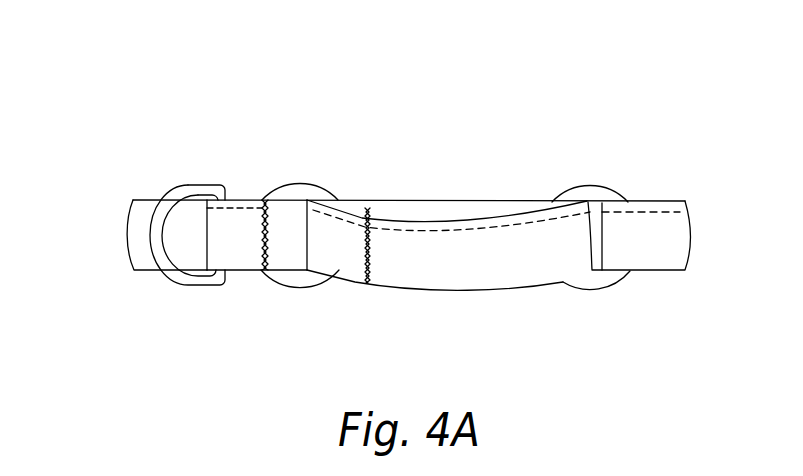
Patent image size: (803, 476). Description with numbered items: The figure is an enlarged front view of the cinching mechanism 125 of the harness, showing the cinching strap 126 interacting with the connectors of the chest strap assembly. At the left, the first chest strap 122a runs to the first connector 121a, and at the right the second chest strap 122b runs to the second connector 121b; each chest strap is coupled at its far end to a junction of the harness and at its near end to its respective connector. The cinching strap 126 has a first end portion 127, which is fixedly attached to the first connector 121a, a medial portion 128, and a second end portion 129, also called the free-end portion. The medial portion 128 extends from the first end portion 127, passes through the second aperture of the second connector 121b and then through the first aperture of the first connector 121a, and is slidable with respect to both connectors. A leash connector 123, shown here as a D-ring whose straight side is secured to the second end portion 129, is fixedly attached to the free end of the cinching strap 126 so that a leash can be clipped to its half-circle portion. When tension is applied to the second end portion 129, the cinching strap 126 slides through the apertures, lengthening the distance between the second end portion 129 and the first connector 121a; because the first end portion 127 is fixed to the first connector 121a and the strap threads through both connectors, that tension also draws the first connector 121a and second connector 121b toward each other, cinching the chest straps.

The cinching mechanism 125 is at (152, 80).
The first connector 121a is at (292, 184).
The second connector 121b is at (590, 185).
The first chest strap 122a is at (146, 199).
The second chest strap 122b is at (667, 200).
The leash connector 123 is at (177, 281).
The cinching strap 126 is at (430, 292).
The first end portion 127 is at (345, 281).
The medial portion 128 is at (488, 273).
The second end portion 129 is at (245, 271).